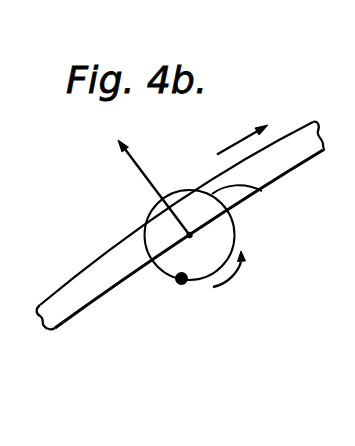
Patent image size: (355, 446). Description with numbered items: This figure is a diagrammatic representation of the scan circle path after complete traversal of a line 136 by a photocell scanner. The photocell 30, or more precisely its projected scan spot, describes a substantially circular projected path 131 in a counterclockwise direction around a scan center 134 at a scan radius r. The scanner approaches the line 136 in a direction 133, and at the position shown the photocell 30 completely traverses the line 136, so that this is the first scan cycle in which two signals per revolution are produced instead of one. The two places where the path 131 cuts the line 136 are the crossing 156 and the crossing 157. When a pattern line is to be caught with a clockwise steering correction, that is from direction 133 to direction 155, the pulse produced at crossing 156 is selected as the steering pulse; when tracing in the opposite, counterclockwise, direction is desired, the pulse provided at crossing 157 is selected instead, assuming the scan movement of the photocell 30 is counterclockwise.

The photocell 30 is at (175, 287).
The projected path 131 is at (206, 281).
The direction 133 is at (139, 170).
The scan center 134 is at (197, 236).
The line 136 is at (102, 273).
The direction 155 is at (247, 137).
The crossing 156 is at (262, 191).
The crossing 157 is at (146, 246).